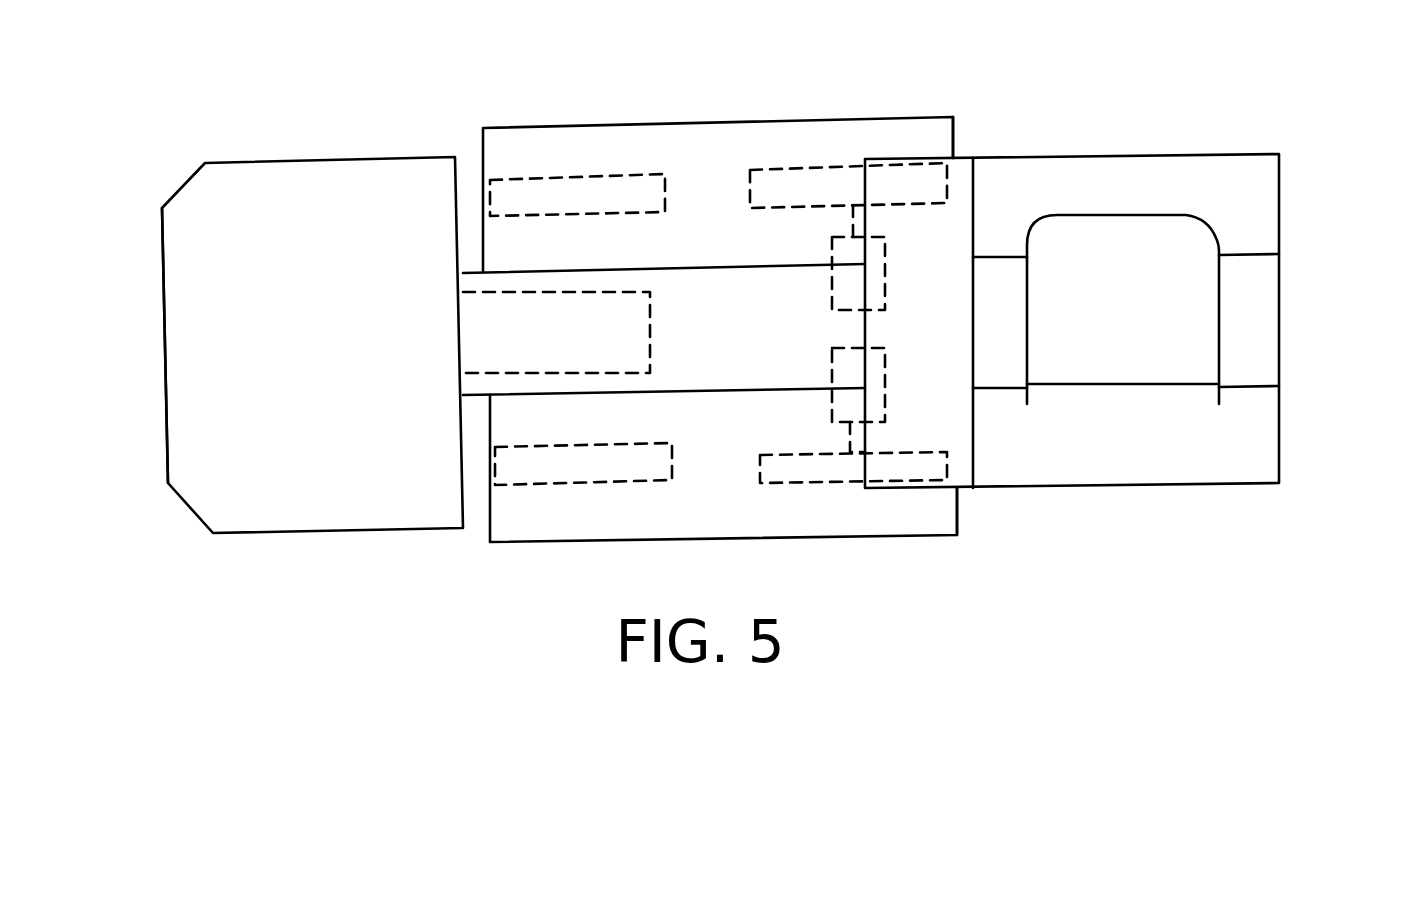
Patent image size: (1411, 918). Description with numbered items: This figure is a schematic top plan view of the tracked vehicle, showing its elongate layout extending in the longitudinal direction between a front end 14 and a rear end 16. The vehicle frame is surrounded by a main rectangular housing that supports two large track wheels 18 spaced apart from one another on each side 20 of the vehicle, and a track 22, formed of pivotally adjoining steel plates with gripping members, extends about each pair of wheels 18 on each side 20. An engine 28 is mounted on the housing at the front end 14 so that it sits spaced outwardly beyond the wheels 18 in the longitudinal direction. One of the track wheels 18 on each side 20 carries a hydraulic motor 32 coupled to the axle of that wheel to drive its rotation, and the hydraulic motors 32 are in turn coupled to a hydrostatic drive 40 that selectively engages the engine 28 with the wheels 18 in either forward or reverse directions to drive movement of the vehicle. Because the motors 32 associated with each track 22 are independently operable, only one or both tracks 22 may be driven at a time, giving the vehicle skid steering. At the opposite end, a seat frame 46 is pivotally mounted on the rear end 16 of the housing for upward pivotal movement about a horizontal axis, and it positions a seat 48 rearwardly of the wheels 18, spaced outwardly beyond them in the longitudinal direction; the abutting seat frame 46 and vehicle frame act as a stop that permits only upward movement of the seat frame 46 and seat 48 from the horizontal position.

The front end 14 is at (126, 290).
The rear end 16 is at (1136, 279).
The track wheels 18 is at (622, 170).
The side 20 is at (684, 112).
The track 22 is at (818, 143).
The engine 28 is at (216, 378).
The hydraulic motor 32 is at (832, 274).
The hydrostatic drive 40 is at (652, 338).
The seat frame 46 is at (1217, 185).
The seat 48 is at (1133, 249).